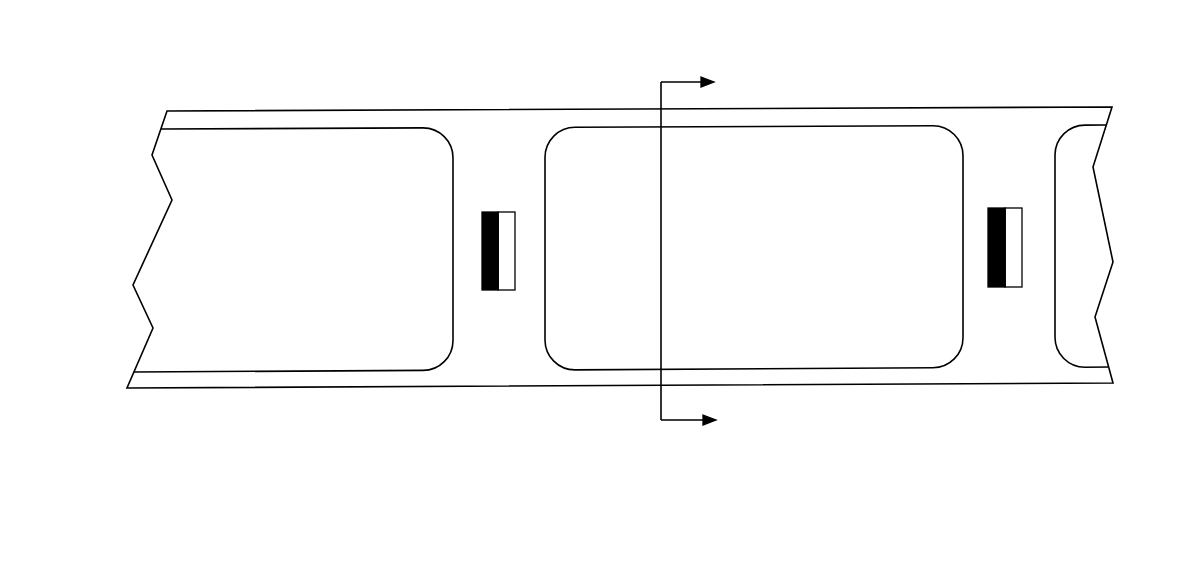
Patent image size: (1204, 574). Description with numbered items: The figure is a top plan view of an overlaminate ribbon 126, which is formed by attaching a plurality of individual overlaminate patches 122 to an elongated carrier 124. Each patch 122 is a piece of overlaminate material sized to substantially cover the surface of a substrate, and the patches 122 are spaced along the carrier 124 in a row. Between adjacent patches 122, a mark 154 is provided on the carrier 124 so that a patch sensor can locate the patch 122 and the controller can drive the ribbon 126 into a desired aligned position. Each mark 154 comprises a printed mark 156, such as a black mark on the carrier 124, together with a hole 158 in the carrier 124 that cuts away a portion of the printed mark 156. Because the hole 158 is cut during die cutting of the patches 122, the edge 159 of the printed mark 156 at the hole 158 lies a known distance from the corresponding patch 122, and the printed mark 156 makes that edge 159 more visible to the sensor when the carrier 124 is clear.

The overlaminate patch 122 is at (290, 362).
The carrier 124 is at (487, 118).
The overlaminate ribbon 126 is at (1045, 72).
The mark 154 is at (520, 198).
The printed mark 156 is at (482, 260).
The hole 158 is at (505, 270).
The edge 159 is at (498, 242).